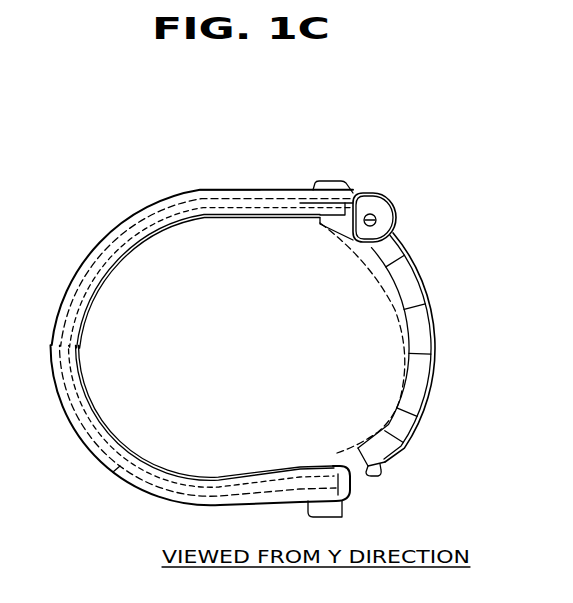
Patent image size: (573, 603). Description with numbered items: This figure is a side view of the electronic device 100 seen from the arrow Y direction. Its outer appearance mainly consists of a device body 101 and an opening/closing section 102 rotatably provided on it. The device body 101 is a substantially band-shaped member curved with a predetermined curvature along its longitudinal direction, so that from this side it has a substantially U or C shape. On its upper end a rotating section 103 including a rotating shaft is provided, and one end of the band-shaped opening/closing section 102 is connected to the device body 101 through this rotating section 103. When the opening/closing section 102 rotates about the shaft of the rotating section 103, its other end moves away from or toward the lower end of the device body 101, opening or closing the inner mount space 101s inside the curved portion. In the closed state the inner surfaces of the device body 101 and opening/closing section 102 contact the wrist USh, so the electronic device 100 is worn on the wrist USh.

The electronic device 100 is at (107, 176).
The device body 101 is at (88, 254).
The mount space 101s is at (238, 260).
The opening/closing section 102 is at (424, 410).
The rotating section 103 is at (388, 200).
The wrist USh is at (113, 472).